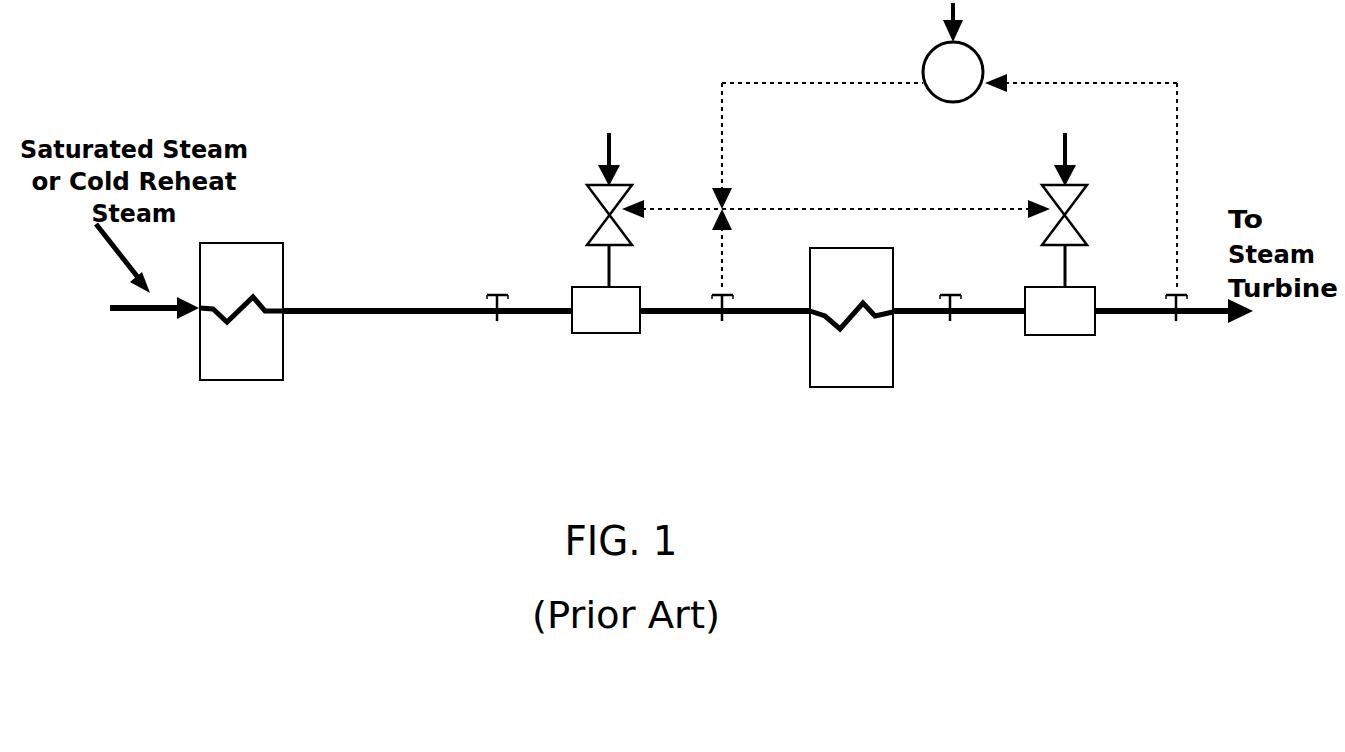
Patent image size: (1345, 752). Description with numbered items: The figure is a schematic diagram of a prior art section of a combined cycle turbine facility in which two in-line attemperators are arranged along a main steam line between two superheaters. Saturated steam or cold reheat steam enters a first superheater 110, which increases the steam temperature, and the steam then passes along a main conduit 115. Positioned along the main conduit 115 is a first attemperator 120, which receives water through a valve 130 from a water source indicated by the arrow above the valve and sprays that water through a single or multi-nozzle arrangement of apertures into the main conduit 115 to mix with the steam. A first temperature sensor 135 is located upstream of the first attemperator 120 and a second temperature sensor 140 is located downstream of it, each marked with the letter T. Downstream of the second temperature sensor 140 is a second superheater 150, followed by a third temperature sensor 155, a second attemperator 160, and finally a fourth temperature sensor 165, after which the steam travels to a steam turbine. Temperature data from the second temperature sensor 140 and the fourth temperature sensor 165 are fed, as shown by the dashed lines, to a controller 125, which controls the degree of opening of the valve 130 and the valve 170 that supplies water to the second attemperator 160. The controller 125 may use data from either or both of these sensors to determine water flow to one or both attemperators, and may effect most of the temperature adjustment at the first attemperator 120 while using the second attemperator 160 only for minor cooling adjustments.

The first superheater 110 is at (241, 311).
The main conduit 115 is at (395, 314).
The first attemperator 120 is at (606, 310).
The controller 125 is at (953, 52).
The valve 130 is at (581, 210).
The first temperature sensor 135 is at (497, 320).
The second temperature sensor 140 is at (722, 320).
The second superheater 150 is at (851, 317).
The third temperature sensor 155 is at (949, 320).
The second attemperator 160 is at (1060, 311).
The fourth temperature sensor 165 is at (1176, 320).
The valve 170 is at (1093, 210).